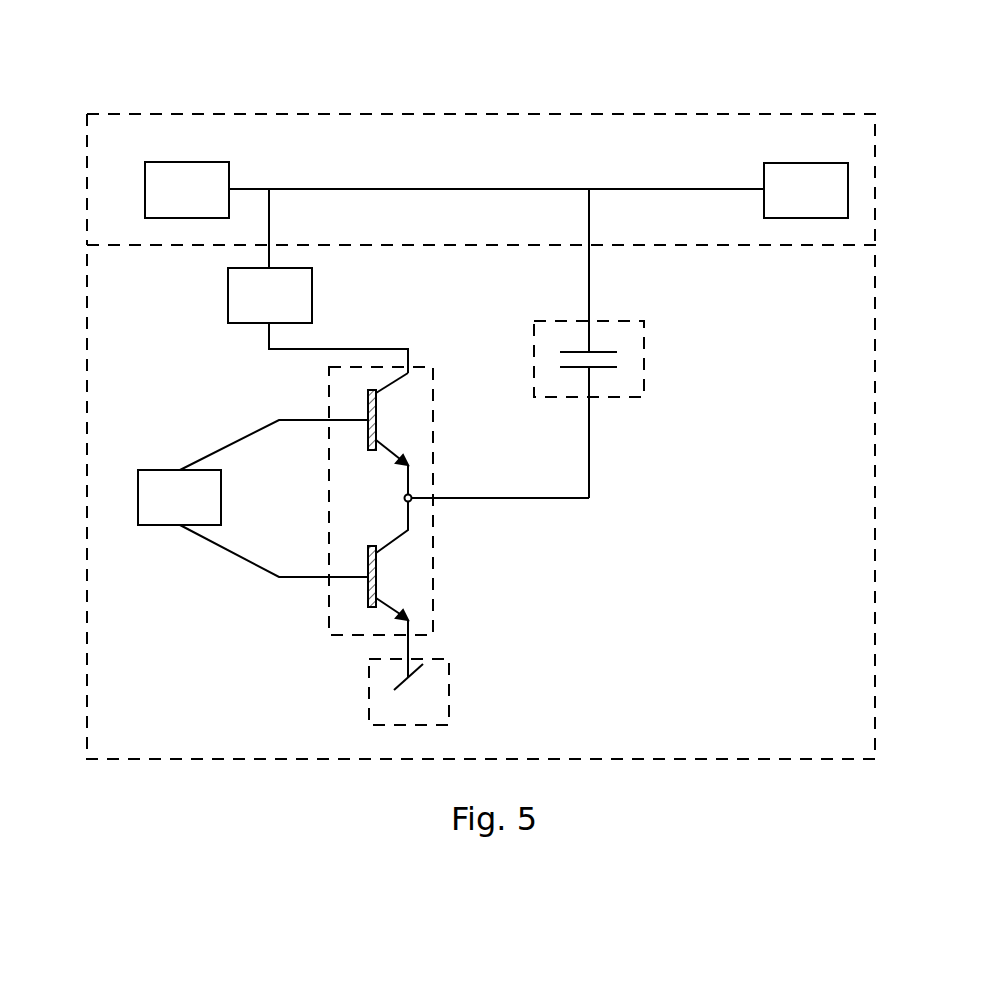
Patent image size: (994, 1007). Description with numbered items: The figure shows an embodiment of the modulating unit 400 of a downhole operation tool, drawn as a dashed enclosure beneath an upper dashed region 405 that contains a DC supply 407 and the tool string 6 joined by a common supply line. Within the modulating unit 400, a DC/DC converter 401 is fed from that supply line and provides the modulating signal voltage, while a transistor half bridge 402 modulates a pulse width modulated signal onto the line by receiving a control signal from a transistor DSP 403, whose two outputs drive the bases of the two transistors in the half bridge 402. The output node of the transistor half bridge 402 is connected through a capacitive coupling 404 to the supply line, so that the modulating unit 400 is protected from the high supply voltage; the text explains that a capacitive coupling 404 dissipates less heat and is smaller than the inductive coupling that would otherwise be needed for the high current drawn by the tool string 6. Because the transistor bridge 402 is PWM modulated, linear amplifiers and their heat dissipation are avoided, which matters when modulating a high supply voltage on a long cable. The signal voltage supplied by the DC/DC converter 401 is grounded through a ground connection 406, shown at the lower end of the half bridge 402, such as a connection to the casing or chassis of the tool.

The power supply section 405 is at (453, 179).
The modulating unit 400 is at (453, 502).
The DC power source 407 is at (229, 171).
The tool string 6 is at (806, 163).
The DC/DC converter 401 is at (312, 295).
The transistor half bridge 402 is at (433, 453).
The transistor DSP 403 is at (163, 470).
The capacitive coupling 404 is at (644, 362).
The ground connection 406 is at (449, 690).